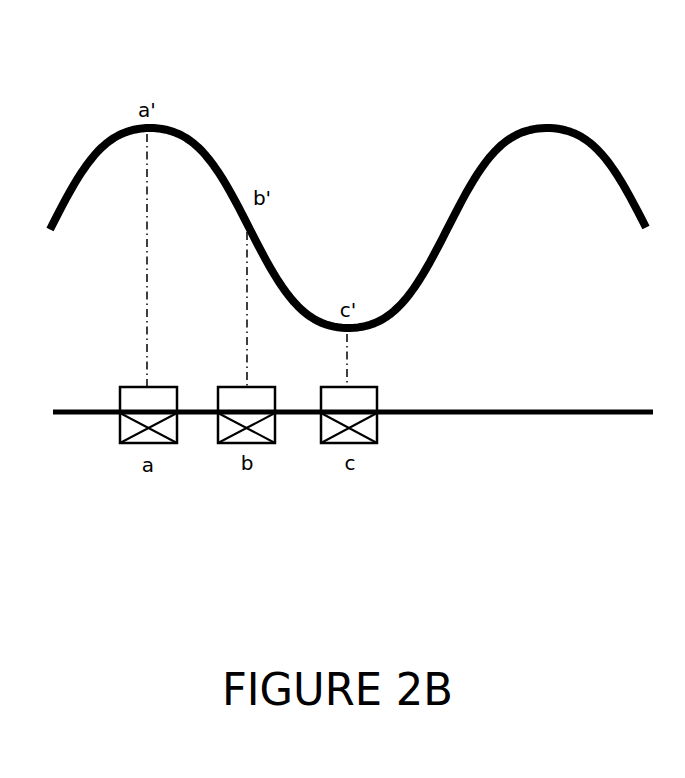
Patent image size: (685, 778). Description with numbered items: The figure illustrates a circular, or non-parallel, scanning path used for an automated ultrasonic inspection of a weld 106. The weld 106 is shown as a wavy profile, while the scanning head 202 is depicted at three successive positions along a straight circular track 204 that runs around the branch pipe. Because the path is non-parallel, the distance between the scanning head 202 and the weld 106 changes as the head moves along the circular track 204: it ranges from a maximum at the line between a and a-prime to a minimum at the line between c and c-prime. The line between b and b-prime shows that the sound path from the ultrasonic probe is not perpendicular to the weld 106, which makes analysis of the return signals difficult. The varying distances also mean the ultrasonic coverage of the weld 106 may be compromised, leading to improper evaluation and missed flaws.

The weld 106 is at (558, 124).
The scanning head 202 is at (120, 437).
The circular track 204 is at (563, 410).